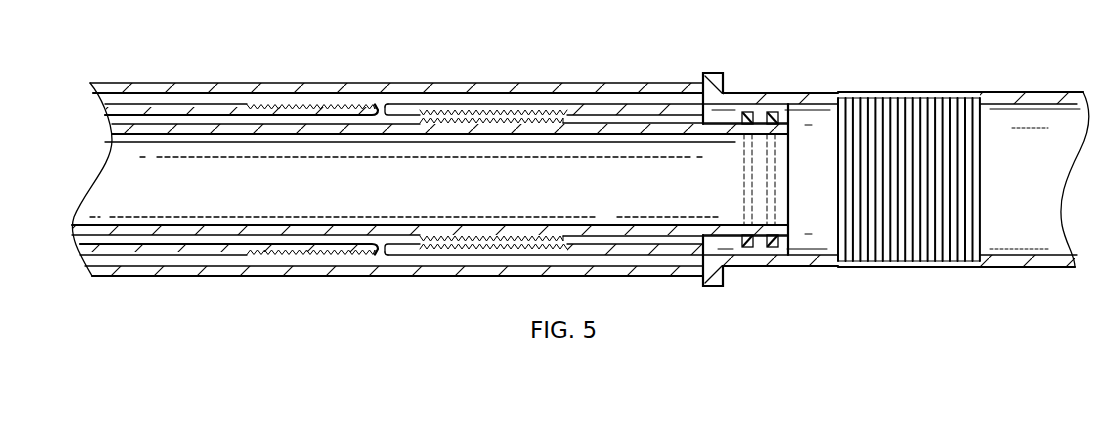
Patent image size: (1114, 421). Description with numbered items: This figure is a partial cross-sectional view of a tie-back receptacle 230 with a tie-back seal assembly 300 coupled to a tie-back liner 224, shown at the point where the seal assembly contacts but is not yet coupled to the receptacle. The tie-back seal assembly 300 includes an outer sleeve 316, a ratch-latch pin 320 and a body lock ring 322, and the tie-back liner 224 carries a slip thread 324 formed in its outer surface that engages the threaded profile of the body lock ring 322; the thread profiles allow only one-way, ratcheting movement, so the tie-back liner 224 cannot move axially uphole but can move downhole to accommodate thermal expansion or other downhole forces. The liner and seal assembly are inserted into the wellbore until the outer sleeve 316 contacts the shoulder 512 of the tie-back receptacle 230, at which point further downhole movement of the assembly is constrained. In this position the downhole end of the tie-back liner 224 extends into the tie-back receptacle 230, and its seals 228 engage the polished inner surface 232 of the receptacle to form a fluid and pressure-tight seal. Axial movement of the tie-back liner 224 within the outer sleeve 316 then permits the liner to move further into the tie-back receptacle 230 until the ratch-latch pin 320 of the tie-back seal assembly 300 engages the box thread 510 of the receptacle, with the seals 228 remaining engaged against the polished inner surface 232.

The tie-back seal assembly 300 is at (348, 62).
The outer sleeve 316 is at (130, 270).
The ratch-latch pin 320 is at (214, 110).
The body lock ring 322 is at (641, 106).
The slip thread 324 is at (487, 118).
The tie-back liner 224 is at (180, 232).
The seals 228 is at (743, 113).
The shoulder 512 is at (713, 287).
The box thread 510 is at (933, 263).
The tie-back receptacle 230 is at (1030, 260).
The polished inner surface 232 is at (1042, 194).